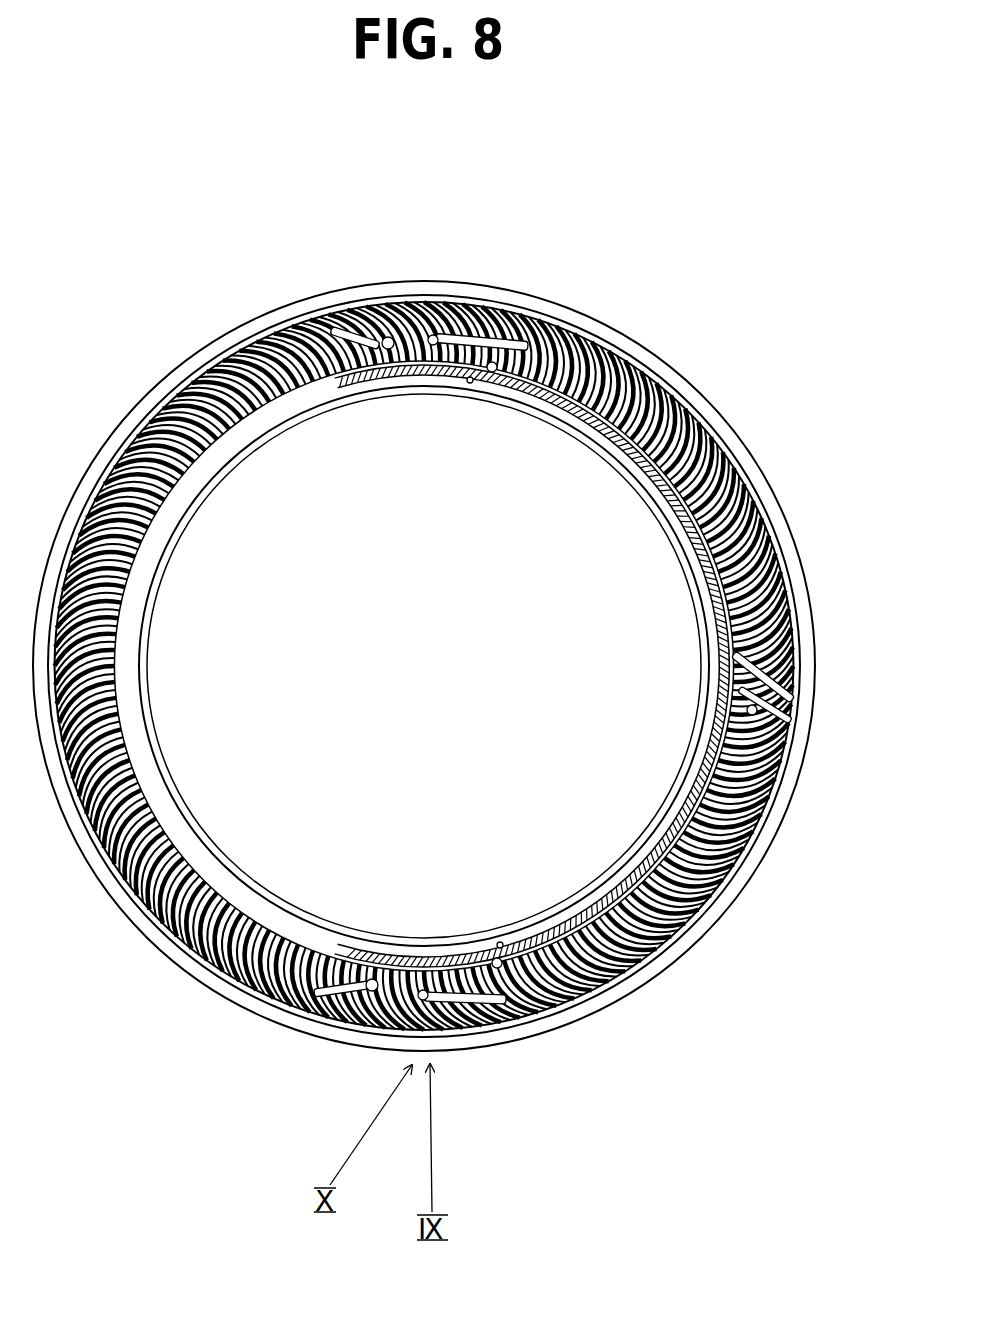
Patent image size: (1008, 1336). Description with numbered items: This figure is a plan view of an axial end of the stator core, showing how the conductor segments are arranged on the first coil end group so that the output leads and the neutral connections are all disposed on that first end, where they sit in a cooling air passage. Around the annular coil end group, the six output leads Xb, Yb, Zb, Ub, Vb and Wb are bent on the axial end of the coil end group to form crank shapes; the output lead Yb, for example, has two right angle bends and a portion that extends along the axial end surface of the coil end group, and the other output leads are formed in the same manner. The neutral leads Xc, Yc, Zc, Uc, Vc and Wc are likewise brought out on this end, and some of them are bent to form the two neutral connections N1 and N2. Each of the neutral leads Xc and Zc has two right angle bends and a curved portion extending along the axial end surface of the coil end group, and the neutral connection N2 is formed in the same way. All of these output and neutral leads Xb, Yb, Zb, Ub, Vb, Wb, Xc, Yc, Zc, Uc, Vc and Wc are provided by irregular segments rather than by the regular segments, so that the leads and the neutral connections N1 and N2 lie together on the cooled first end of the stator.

The output lead Ub is at (793, 612).
The neutral lead Uc is at (648, 470).
The output lead Vb is at (350, 332).
The neutral lead Vc is at (388, 350).
The output lead Wb is at (500, 338).
The neutral lead Wc is at (492, 372).
The output lead Xb is at (792, 702).
The neutral lead Xc is at (708, 758).
The output lead Yb is at (436, 993).
The neutral lead Yc is at (505, 958).
The output lead Zb is at (356, 986).
The neutral lead Zc is at (378, 980).
The neutral connection N1 is at (500, 930).
The neutral connection N2 is at (465, 398).